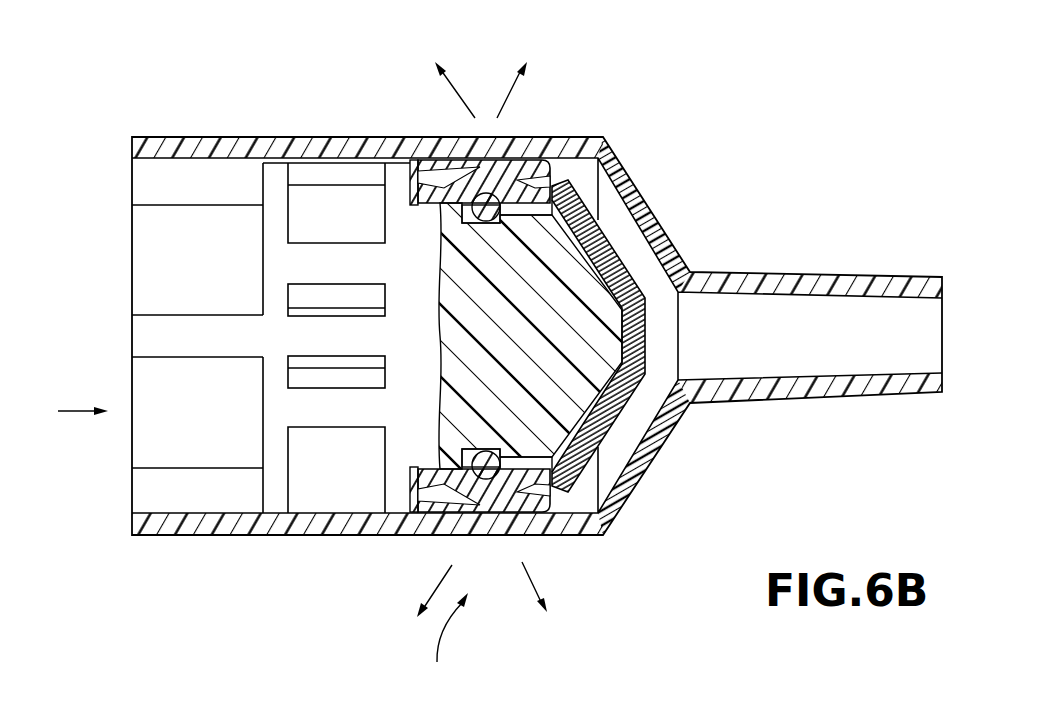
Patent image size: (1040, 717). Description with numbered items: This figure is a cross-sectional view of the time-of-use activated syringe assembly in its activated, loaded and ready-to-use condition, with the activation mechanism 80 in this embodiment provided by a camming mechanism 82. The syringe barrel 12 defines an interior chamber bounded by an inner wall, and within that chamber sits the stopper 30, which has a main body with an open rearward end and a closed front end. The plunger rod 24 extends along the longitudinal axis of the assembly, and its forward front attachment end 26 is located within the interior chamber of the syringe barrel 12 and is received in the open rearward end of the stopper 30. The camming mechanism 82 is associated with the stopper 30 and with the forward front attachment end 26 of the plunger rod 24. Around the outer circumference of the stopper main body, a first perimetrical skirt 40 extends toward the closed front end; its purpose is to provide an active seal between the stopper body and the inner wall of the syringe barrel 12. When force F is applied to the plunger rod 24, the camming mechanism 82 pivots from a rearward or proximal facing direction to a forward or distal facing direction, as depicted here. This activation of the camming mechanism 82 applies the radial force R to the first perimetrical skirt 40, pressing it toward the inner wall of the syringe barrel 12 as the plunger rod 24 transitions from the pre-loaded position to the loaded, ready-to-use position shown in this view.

The syringe barrel 12 is at (214, 137).
The plunger rod 24 is at (160, 437).
The forward front attachment end 26 is at (572, 285).
The stopper 30 is at (594, 432).
The first perimetrical skirt 40 is at (517, 500).
The activation mechanism 80 is at (447, 645).
The camming mechanism 82 is at (476, 472).
The radial force R is at (469, 334).
The force F is at (71, 412).